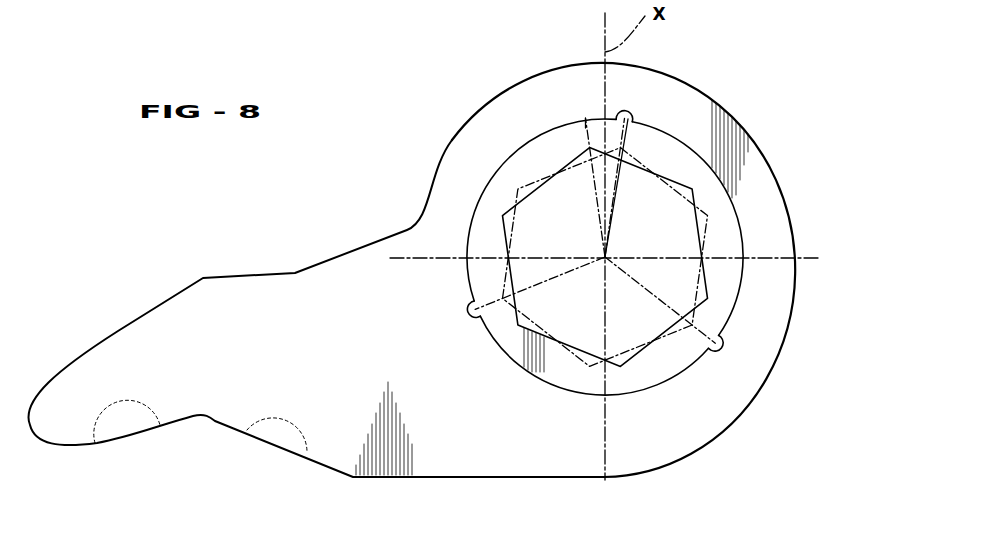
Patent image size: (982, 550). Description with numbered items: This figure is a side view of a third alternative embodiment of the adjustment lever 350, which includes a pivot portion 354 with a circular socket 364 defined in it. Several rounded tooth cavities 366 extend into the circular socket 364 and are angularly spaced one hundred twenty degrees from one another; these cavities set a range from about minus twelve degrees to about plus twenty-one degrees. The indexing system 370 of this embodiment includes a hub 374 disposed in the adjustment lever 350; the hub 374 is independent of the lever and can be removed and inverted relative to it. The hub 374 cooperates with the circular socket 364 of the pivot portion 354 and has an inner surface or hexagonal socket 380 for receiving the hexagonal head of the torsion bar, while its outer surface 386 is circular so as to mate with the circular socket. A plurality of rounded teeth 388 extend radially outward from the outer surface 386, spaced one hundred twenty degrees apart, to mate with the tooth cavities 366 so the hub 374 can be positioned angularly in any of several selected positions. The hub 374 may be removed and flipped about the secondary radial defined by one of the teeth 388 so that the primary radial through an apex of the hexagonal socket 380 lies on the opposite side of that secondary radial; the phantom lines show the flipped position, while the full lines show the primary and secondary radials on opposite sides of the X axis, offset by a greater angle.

The adjustment lever 350 is at (376, 155).
The pivot portion 354 is at (757, 156).
The circular socket 364 is at (514, 160).
The tooth cavities 366 is at (633, 110).
The indexing system 370 is at (786, 185).
The hub 374 is at (667, 362).
The hexagonal socket 380 is at (550, 338).
The outer surface 386 is at (504, 345).
The teeth 388 is at (637, 113).